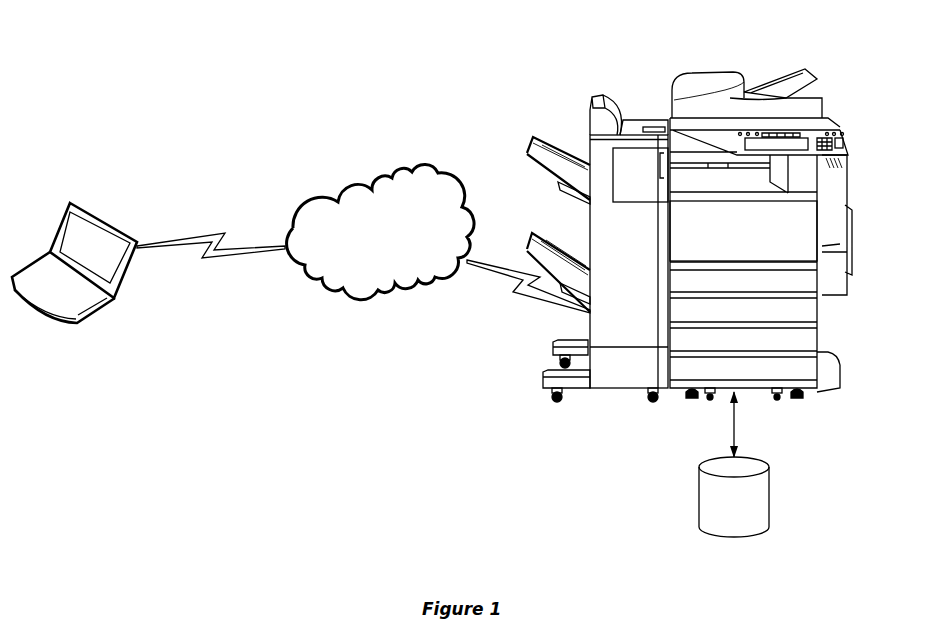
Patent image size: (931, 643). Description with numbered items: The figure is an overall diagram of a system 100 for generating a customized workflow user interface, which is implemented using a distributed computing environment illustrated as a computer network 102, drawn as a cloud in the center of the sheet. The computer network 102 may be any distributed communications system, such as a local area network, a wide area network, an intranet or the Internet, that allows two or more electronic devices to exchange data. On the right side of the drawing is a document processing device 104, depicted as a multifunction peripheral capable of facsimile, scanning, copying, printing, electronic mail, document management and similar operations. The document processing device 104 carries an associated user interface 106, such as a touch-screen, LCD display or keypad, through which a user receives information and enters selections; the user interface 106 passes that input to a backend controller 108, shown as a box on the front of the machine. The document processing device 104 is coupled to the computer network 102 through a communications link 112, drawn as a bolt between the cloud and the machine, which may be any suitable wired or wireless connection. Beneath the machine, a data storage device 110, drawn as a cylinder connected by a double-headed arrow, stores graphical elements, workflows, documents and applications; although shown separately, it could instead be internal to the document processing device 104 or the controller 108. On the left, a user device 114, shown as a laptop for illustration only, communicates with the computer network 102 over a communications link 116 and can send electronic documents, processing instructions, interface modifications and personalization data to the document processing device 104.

The system 100 is at (167, 60).
The computer network 102 is at (423, 158).
The document processing device 104 is at (700, 76).
The user interface 106 is at (843, 133).
The controller 108 is at (803, 225).
The data storage device 110 is at (768, 465).
The communications link 112 is at (530, 293).
The user device 114 is at (63, 210).
The communications link 116 is at (216, 261).